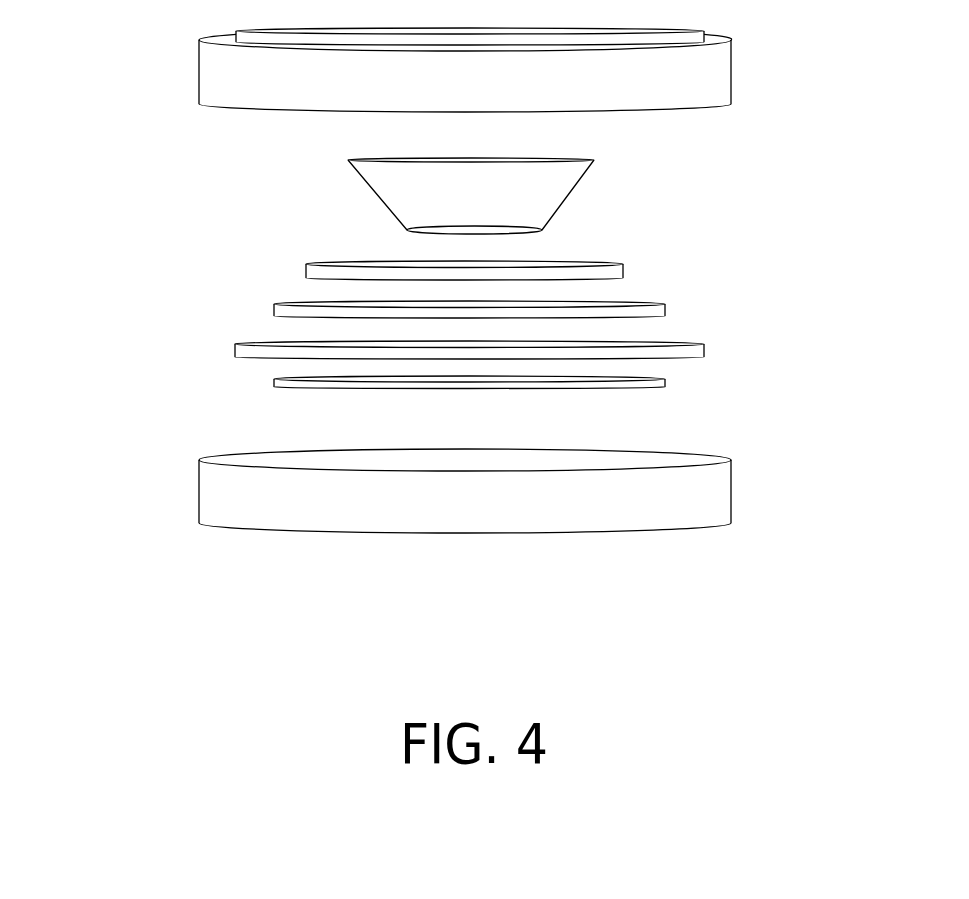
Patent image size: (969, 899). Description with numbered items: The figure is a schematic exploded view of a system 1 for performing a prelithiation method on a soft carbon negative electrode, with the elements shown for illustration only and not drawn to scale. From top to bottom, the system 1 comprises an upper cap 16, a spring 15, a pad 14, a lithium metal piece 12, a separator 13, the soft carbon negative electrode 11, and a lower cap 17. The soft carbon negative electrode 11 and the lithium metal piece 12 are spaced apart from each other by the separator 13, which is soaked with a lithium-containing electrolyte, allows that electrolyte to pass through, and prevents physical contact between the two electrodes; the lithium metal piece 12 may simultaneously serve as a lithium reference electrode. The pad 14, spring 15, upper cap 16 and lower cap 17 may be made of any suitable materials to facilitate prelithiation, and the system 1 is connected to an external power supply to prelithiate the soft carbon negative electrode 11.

The system 1 is at (118, 143).
The soft carbon negative electrode 11 is at (665, 382).
The lithium metal piece 12 is at (656, 311).
The separator 13 is at (694, 351).
The pad 14 is at (623, 273).
The spring 15 is at (539, 193).
The upper cap 16 is at (704, 75).
The lower cap 17 is at (715, 492).